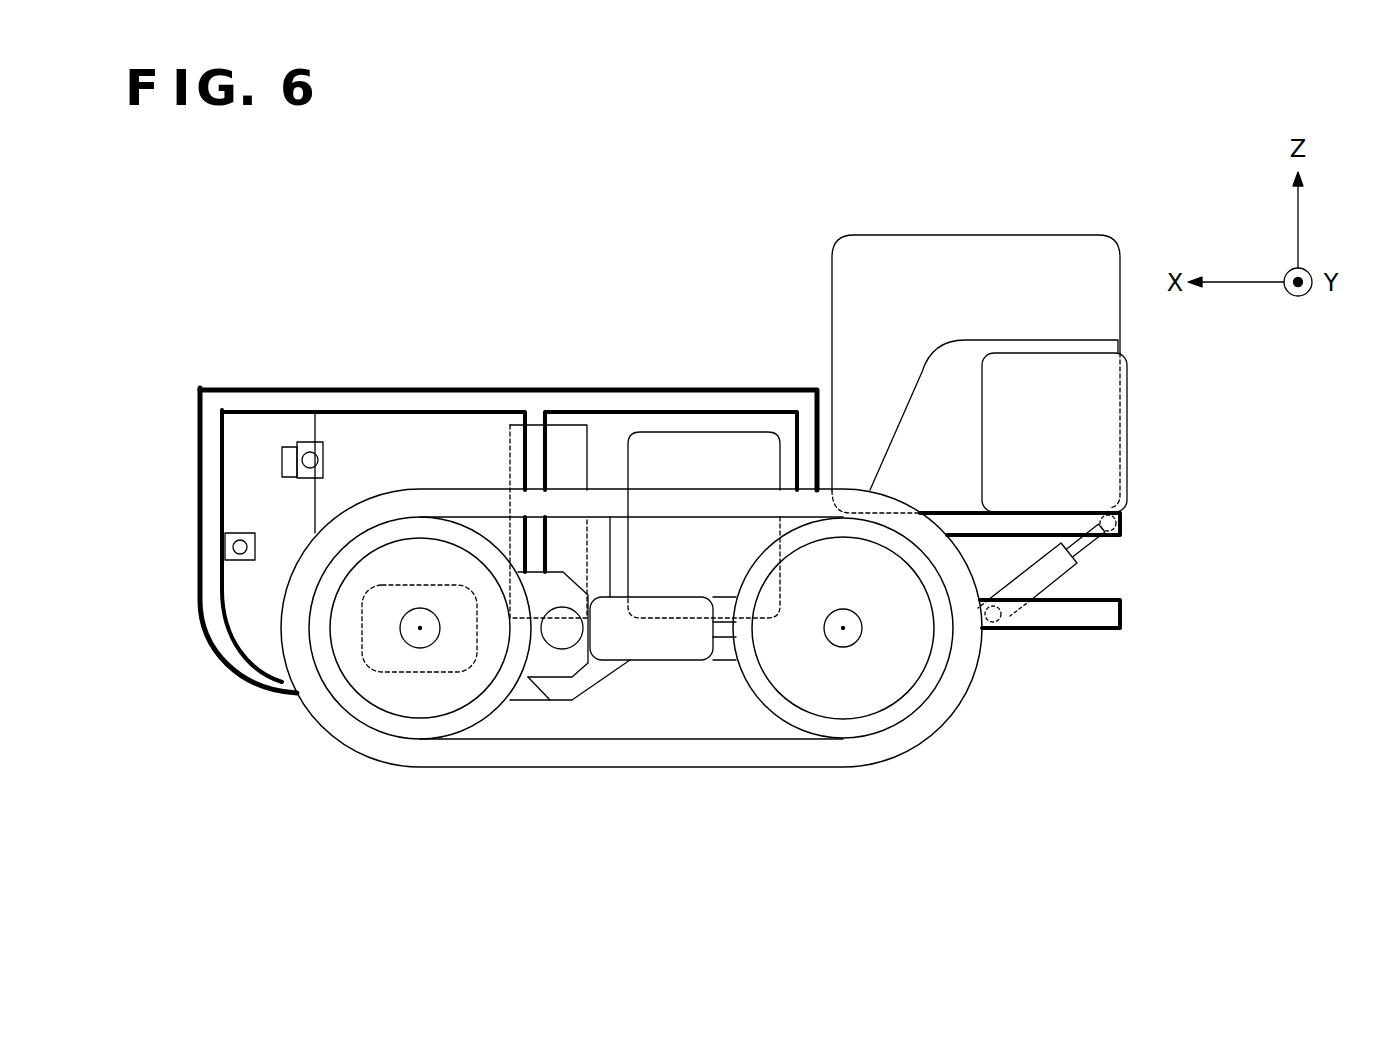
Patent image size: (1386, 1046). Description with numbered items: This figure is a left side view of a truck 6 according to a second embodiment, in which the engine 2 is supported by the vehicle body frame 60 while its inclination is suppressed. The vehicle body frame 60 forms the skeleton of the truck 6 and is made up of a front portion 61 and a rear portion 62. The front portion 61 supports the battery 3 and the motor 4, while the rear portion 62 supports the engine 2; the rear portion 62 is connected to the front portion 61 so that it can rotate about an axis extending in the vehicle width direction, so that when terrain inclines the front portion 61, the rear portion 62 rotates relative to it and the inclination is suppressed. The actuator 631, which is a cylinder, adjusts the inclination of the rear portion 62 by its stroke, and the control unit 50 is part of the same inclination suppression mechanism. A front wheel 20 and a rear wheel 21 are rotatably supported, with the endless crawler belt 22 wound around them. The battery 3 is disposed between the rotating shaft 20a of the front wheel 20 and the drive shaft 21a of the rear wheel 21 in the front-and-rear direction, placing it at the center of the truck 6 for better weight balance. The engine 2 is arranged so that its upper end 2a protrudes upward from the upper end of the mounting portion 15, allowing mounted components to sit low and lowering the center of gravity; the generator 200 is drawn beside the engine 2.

The truck 6 is at (275, 215).
The vehicle body frame 60 is at (177, 382).
The front portion 61 is at (198, 545).
The mounting portion 15 is at (323, 387).
The control unit 50 is at (557, 423).
The battery 3 is at (667, 432).
The motor 4 is at (362, 645).
The front wheel 20 is at (480, 722).
The rotating shaft 20a is at (420, 632).
The rear wheel 21 is at (788, 727).
The drive shaft 21a is at (843, 632).
The crawler belt 22 is at (688, 768).
The engine 2 is at (958, 214).
The upper end 2a is at (900, 233).
The generator 200 is at (1127, 415).
The rear portion 62 is at (1120, 536).
The actuator 631 is at (1065, 577).